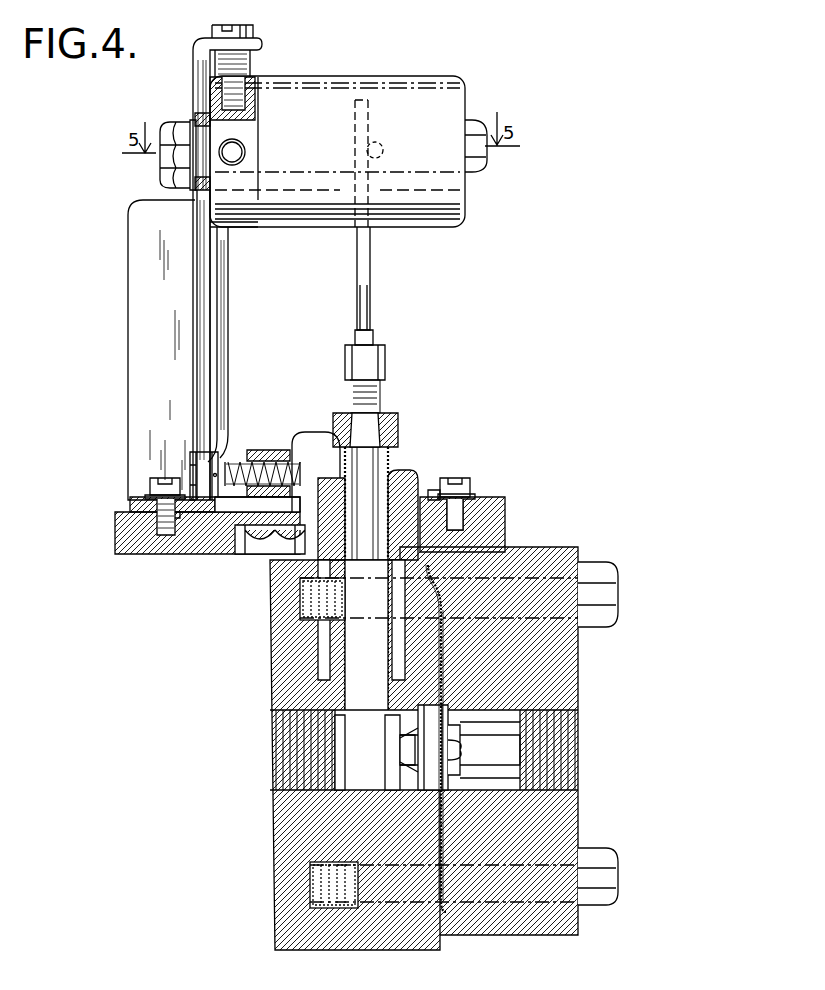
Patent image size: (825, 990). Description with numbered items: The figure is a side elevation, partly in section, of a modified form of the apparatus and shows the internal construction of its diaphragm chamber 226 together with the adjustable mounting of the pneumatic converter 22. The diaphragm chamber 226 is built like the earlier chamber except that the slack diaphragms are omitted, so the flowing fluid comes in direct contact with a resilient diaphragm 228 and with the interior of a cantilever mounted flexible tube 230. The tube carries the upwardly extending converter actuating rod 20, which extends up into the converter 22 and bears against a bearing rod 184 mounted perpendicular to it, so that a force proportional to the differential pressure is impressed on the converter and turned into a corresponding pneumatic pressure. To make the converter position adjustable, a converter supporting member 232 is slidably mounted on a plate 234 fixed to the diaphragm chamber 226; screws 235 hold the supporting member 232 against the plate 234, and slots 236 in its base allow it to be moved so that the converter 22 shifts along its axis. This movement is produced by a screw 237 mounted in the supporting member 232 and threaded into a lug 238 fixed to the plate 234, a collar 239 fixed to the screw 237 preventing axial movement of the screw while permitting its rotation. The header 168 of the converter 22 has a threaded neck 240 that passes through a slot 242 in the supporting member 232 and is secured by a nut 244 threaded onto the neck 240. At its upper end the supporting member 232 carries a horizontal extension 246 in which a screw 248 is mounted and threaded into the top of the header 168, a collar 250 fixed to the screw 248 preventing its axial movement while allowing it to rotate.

The converter actuating rod 20 is at (357, 268).
The pneumatic converter 22 is at (397, 82).
The header 168 is at (259, 226).
The bearing rod 184 is at (383, 150).
The diaphragm chamber 226 is at (553, 549).
The resilient diaphragm 228 is at (446, 827).
The cantilever mounted flexible tube 230 is at (392, 462).
The converter supporting member 232 is at (203, 331).
The plate 234 is at (120, 540).
The screws 235 is at (156, 481).
The slots 236 is at (180, 514).
The screw 237 is at (257, 452).
The lug 238 is at (280, 452).
The collar 239 is at (218, 455).
The threaded neck 240 is at (205, 140).
The slot 242 is at (210, 180).
The nut 244 is at (183, 160).
The horizontal extension 246 is at (256, 42).
The screw 248 is at (240, 72).
The collar 250 is at (212, 56).